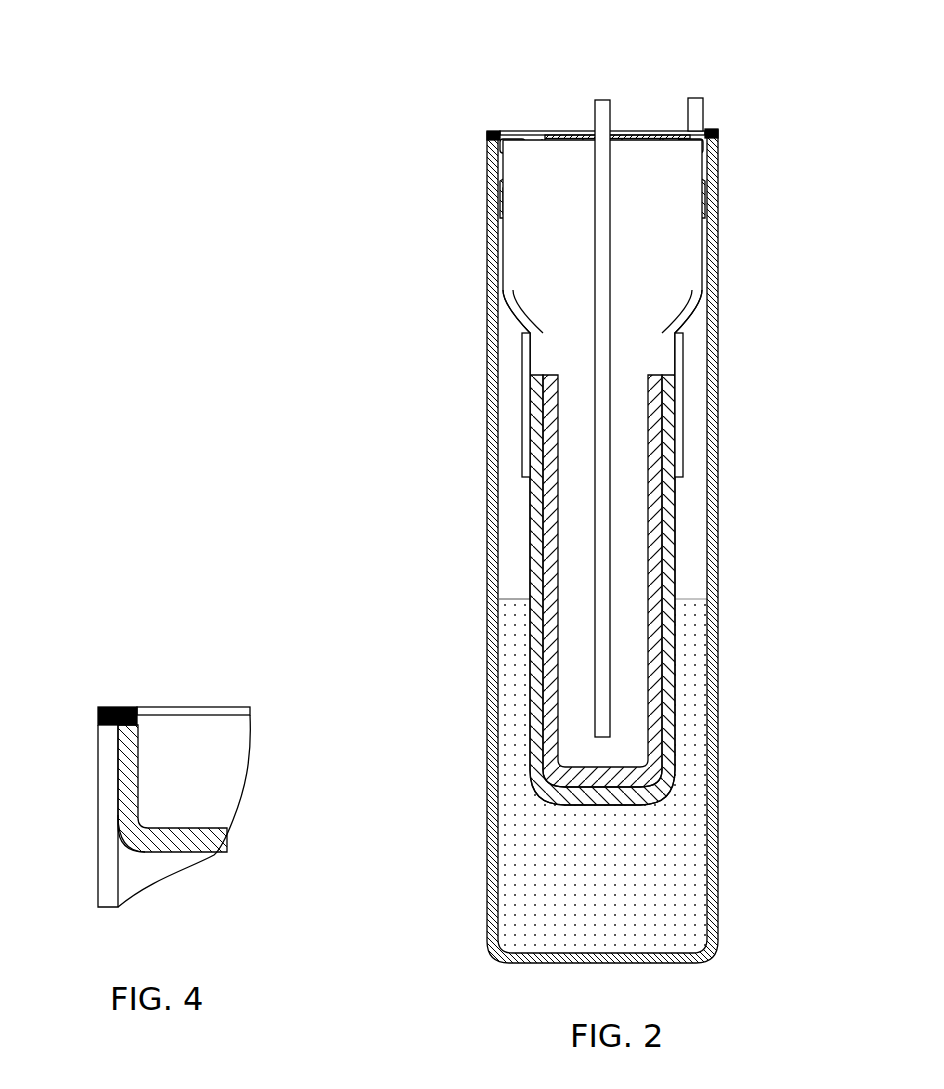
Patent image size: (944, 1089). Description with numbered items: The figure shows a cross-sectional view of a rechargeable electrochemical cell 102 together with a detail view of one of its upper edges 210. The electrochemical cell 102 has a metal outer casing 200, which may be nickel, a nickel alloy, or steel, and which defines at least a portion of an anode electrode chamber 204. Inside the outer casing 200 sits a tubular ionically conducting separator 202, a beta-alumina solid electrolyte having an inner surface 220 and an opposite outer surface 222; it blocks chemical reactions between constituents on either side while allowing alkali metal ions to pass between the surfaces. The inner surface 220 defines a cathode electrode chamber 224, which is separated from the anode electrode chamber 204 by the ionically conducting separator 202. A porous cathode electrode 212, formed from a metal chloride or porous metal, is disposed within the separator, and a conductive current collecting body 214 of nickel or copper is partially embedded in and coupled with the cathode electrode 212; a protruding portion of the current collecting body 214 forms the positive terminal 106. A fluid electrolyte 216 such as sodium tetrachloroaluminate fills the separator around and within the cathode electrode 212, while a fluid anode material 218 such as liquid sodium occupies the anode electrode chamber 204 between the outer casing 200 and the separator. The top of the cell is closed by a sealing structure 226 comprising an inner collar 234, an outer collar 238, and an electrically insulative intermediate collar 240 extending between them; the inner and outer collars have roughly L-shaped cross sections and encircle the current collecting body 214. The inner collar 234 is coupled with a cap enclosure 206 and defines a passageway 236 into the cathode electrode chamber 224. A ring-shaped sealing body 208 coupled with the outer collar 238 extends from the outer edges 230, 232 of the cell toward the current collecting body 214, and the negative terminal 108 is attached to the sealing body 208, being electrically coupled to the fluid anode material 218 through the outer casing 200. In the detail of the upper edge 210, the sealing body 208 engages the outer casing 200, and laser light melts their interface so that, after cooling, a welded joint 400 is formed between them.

In FIG. 2, the electrochemical cell 102 is at (432, 80).
In FIG. 4, the electrochemical cell 102 is at (262, 680).
In FIG. 2, the positive terminal 106 is at (607, 100).
In FIG. 2, the negative terminal 108 is at (705, 112).
In FIG. 2, the outer casing 200 is at (720, 290).
In FIG. 4, the outer casing 200 is at (108, 778).
In FIG. 2, the ionically conducting separator 202 is at (688, 310).
In FIG. 2, the anode electrode chamber 204 is at (507, 562).
In FIG. 2, the cap enclosure 206 is at (650, 130).
In FIG. 2, the sealing body 208 is at (695, 150).
In FIG. 4, the sealing body 208 is at (135, 770).
In FIG. 2, the upper edge 210 is at (493, 128).
In FIG. 4, the upper edge 210 is at (107, 703).
In FIG. 2, the cathode electrode 212 is at (640, 580).
In FIG. 2, the conductive current collecting body 214 is at (620, 283).
In FIG. 2, the fluid electrolyte 216 is at (652, 357).
In FIG. 2, the fluid anode material 218 is at (690, 830).
In FIG. 2, the inner surface 220 is at (526, 292).
In FIG. 2, the outer surface 222 is at (512, 308).
In FIG. 2, the cathode electrode chamber 224 is at (575, 269).
In FIG. 2, the sealing structure 226 is at (467, 88).
In FIG. 2, the outer edge 230 is at (490, 421).
In FIG. 2, the outer edge 232 is at (716, 421).
In FIG. 2, the inner collar 234 is at (548, 185).
In FIG. 2, the passageway 236 is at (636, 176).
In FIG. 2, the outer collar 238 is at (527, 195).
In FIG. 2, the intermediate collar 240 is at (507, 210).
In FIG. 4, the welded joint 400 is at (138, 705).